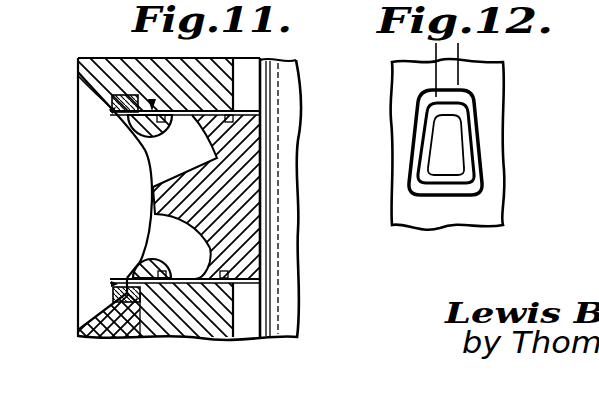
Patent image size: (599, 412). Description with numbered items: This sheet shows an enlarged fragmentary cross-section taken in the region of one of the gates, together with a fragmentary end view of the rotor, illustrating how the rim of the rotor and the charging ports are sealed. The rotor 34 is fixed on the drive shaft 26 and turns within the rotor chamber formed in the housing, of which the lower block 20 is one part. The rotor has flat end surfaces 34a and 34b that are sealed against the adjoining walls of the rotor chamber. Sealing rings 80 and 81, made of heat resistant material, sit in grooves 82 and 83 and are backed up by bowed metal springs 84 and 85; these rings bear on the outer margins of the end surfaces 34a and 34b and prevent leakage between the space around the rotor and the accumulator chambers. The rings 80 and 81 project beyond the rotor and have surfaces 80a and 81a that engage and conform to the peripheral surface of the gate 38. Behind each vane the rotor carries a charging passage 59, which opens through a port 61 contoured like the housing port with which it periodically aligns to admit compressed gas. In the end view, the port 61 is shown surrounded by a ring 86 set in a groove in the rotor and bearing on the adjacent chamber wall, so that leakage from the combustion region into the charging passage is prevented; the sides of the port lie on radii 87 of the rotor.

In FIG. 11, the lower block 20 is at (172, 308).
In FIG. 11, the drive shaft 26 is at (279, 268).
In FIG. 11, the rotor 34 is at (296, 174).
In FIG. 11, the end surface 34a is at (197, 59).
In FIG. 11, the end surface 34b is at (238, 308).
In FIG. 11, the gate 38 is at (100, 209).
In FIG. 11, the charging passage 59 is at (206, 197).
In FIG. 11, the port 61 is at (213, 162).
In FIG. 12, the port 61 is at (450, 143).
In FIG. 11, the sealing ring 80 is at (128, 104).
In FIG. 11, the surface 80a is at (113, 109).
In FIG. 11, the sealing ring 81 is at (125, 277).
In FIG. 11, the surface 81a is at (112, 284).
In FIG. 11, the groove 82 is at (112, 95).
In FIG. 11, the groove 83 is at (122, 338).
In FIG. 11, the bowed metal spring 84 is at (151, 100).
In FIG. 11, the bowed metal spring 85 is at (78, 332).
In FIG. 12, the ring 86 is at (478, 167).
In FIG. 12, the radius 87 is at (437, 77).